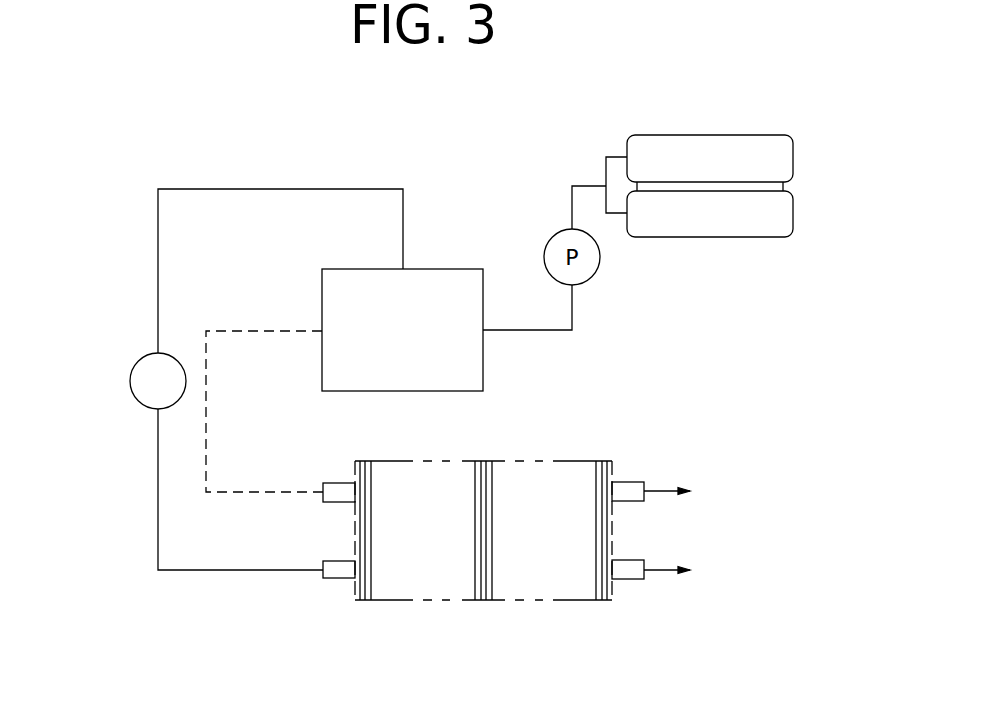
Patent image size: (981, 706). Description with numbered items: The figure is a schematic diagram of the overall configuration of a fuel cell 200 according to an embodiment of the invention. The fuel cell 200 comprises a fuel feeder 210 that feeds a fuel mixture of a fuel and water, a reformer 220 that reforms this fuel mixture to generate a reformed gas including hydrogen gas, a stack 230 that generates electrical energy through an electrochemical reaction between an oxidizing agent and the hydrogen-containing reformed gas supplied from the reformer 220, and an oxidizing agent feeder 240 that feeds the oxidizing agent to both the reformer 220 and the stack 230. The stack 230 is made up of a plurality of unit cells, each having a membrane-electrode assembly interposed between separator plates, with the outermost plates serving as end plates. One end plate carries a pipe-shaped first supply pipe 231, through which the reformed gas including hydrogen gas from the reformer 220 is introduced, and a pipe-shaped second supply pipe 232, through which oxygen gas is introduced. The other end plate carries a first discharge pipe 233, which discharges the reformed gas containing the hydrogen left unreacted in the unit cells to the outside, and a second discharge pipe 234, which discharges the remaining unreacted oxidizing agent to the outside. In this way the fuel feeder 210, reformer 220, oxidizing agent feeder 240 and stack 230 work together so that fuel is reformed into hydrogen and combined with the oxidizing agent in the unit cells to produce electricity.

The fuel cell 200 is at (266, 102).
The fuel feeder 210 is at (575, 134).
The reformer 220 is at (330, 252).
The stack 230 is at (500, 440).
The first supply pipe 231 is at (342, 483).
The second supply pipe 232 is at (342, 578).
The first discharge pipe 233 is at (633, 579).
The second discharge pipe 234 is at (633, 482).
The oxidizing agent feeder 240 is at (110, 345).